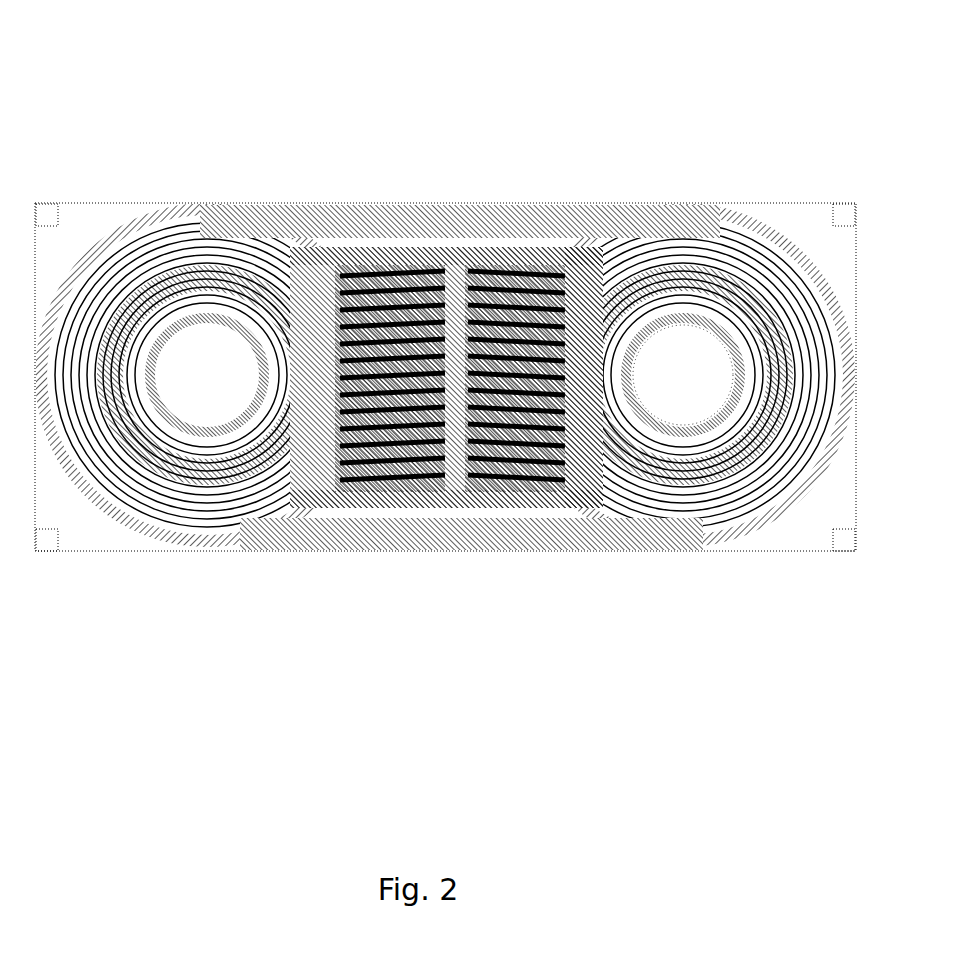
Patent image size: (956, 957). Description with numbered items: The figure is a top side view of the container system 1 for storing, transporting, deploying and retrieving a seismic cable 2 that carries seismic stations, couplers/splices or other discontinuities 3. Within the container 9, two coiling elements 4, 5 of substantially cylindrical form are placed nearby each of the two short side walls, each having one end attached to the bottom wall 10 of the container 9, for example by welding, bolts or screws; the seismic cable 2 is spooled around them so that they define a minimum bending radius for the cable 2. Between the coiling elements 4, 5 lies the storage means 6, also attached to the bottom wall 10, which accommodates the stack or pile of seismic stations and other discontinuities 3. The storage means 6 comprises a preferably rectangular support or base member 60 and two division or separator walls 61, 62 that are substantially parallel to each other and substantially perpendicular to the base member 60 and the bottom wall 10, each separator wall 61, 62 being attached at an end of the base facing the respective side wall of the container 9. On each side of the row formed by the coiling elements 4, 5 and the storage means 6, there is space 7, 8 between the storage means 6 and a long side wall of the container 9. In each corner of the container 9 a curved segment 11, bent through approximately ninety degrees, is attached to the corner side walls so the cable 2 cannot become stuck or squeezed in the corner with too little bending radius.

The container system 1 is at (660, 165).
The seismic cable 2 is at (693, 505).
The seismic stations and/or couplers/splices and/or other discontinuities 3 is at (457, 457).
The coiling element 4 is at (162, 340).
The coiling element 5 is at (690, 318).
The storage means 6 is at (540, 250).
The space 7 is at (418, 532).
The space 8 is at (425, 230).
The container 9 is at (148, 550).
The bottom wall 10 is at (693, 388).
The curved segment 11 is at (92, 215).
The base member 60 is at (592, 390).
The separator wall 61 is at (352, 250).
The separator wall 62 is at (368, 508).